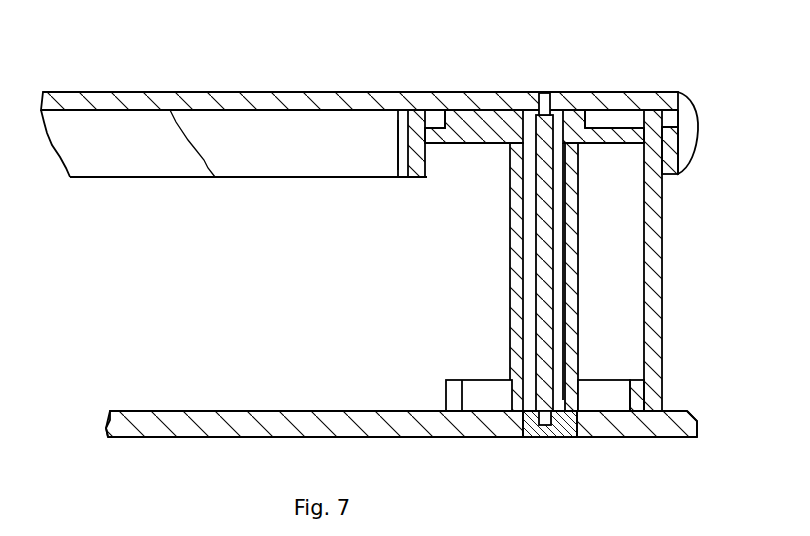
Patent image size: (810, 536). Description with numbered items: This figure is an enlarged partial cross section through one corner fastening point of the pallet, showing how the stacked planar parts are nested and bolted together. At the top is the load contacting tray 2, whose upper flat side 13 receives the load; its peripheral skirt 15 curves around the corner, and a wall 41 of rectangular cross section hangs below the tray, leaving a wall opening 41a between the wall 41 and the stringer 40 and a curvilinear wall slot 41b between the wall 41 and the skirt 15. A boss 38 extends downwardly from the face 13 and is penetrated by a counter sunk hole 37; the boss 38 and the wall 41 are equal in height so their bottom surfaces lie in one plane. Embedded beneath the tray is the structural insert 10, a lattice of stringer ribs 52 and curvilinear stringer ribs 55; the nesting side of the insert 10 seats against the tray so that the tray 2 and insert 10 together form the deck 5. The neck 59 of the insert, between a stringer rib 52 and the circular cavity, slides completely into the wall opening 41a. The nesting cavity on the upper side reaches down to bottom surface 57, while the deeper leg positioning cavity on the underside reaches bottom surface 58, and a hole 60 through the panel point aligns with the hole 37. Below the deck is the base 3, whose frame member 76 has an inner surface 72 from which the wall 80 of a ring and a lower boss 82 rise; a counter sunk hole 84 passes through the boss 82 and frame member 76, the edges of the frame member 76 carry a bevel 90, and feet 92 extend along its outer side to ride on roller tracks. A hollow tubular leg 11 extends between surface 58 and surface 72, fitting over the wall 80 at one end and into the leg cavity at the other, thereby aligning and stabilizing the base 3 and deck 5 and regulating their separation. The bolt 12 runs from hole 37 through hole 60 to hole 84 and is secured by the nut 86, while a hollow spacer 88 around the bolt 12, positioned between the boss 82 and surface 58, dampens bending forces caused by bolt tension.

The load contacting tray 2 is at (197, 87).
The base 3 is at (183, 410).
The deck 5 is at (544, 73).
The structural insert 10 is at (117, 178).
The leg 11 is at (662, 322).
The bolt 12 is at (553, 262).
The upper flat side 13 is at (100, 92).
The skirt 15 is at (698, 125).
The counter sunk hole 37 is at (520, 92).
The boss 38 is at (503, 128).
The stringer 40 is at (294, 160).
The wall 41 is at (447, 112).
The wall opening 41a is at (437, 110).
The wall slot 41b is at (667, 110).
The stringer rib 52 is at (105, 160).
The curvilinear stringer rib 55 is at (672, 178).
The bottom surface 57 is at (472, 130).
The bottom surface 58 is at (612, 145).
The neck 59 is at (418, 178).
The hole 60 is at (578, 172).
The inner surface 72 is at (300, 411).
The frame member 76 is at (105, 425).
The wall 80 is at (455, 380).
The boss 82 is at (498, 397).
The counter sunk hole 84 is at (560, 412).
The nut 86 is at (545, 438).
The spacer 88 is at (578, 287).
The bevel 90 is at (690, 415).
The feet 92 is at (183, 437).